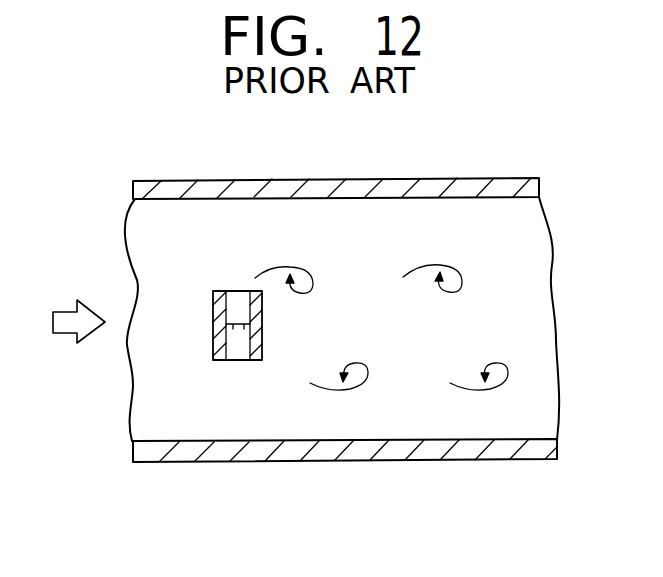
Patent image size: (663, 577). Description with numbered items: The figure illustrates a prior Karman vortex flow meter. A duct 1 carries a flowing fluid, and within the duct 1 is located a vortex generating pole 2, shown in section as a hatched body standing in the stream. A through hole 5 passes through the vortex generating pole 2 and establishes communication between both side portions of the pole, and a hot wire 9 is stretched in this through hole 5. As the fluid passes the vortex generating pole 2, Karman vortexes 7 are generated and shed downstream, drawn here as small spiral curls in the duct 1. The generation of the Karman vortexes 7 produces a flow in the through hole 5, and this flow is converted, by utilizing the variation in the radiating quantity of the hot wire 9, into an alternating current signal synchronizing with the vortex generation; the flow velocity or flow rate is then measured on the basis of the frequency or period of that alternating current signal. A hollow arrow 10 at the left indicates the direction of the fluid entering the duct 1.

The duct 1 is at (449, 461).
The vortex generating pole 2 is at (217, 364).
The through hole 5 is at (258, 364).
The Karman vortexes 7 is at (275, 264).
The hot wire 9 is at (238, 334).
The air flow direction 10 is at (67, 336).